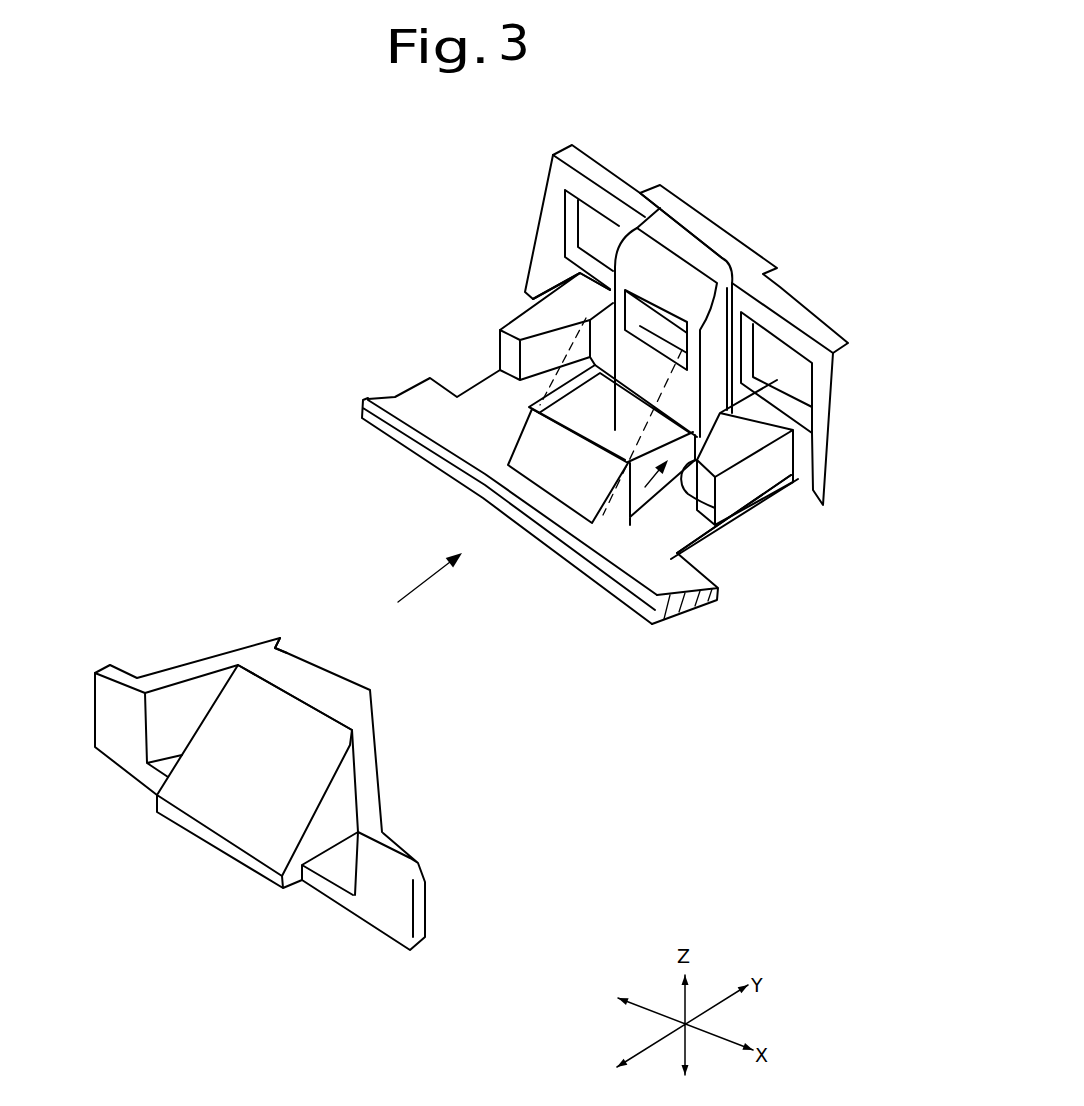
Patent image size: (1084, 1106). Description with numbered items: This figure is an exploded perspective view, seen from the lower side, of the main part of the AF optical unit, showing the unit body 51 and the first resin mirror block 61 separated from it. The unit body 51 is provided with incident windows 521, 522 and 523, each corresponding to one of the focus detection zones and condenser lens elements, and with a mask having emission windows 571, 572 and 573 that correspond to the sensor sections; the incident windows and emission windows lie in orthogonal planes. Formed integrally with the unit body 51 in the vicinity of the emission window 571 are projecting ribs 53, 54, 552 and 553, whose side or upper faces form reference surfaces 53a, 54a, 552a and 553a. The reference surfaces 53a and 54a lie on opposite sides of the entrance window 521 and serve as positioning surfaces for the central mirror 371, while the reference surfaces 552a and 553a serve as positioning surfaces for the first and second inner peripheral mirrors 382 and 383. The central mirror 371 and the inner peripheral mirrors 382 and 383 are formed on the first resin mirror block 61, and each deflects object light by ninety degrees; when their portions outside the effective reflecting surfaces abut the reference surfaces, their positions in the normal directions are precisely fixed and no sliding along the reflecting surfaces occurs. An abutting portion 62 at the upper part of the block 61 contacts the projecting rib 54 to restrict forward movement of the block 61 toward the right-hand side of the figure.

The unit body 51 is at (467, 440).
The incident window 521 is at (623, 385).
The incident window 522 is at (798, 508).
The incident window 523 is at (488, 318).
The projecting rib 53 is at (603, 503).
The reference surface 53a is at (570, 483).
The projecting rib 54 is at (705, 325).
The reference surface 54a is at (681, 271).
The emission window 571 is at (668, 333).
The emission window 572 is at (792, 386).
The emission window 573 is at (597, 236).
The projecting rib 552 is at (747, 433).
The reference surface 552a is at (700, 514).
The projecting rib 553 is at (562, 300).
The reference surface 553a is at (541, 357).
The first resin mirror block 61 is at (217, 822).
The abutting portion 62 is at (284, 640).
The central mirror 371 is at (335, 668).
The first inner peripheral mirror 382 is at (386, 766).
The second inner peripheral mirror 383 is at (195, 645).